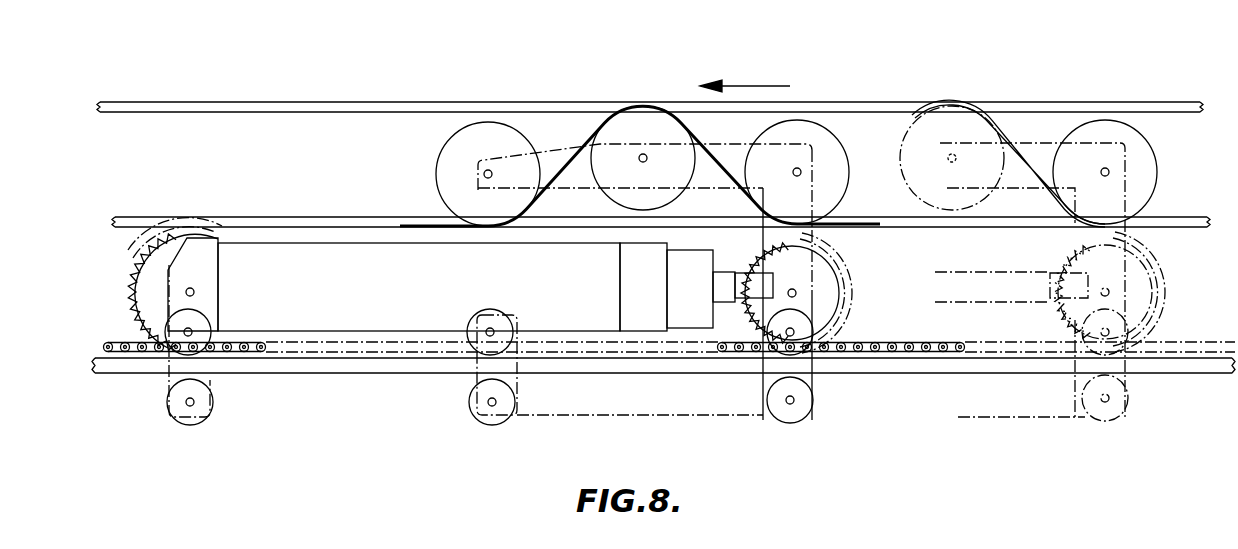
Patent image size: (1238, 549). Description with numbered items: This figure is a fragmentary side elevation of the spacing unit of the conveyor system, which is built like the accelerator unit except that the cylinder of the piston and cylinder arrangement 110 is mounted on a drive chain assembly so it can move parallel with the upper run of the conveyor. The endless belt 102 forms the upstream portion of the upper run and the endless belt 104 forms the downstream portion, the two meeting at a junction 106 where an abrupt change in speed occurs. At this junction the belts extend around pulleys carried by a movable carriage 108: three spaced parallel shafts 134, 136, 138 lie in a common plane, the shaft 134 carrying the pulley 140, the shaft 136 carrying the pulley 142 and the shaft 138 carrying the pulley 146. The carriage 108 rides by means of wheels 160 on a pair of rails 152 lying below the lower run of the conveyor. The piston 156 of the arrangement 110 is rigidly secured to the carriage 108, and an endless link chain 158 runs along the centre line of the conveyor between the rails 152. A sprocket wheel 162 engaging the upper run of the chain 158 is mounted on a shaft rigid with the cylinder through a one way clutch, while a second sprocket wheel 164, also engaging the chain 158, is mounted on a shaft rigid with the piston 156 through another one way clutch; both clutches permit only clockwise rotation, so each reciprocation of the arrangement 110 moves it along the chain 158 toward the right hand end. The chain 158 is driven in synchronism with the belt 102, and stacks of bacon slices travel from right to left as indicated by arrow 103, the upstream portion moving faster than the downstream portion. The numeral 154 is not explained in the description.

The endless belt 102 is at (248, 102).
The arrow 103 is at (745, 77).
The endless belt 104 is at (925, 104).
The junction 106 is at (655, 108).
The movable carriage 108 is at (478, 160).
The piston and cylinder arrangement 110 is at (512, 289).
The shaft 134 is at (483, 176).
The shaft 136 is at (640, 162).
The shaft 138 is at (790, 178).
The pulley 140 is at (488, 128).
The pulley 142 is at (620, 128).
The pulley 146 is at (800, 128).
The rail 152 is at (350, 373).
The piston rod 154 is at (610, 267).
The piston 156 is at (722, 272).
The endless link chain 158 is at (133, 352).
The wheels 160 is at (150, 327).
The sprocket wheel 162 is at (152, 267).
The second sprocket wheel 164 is at (825, 288).